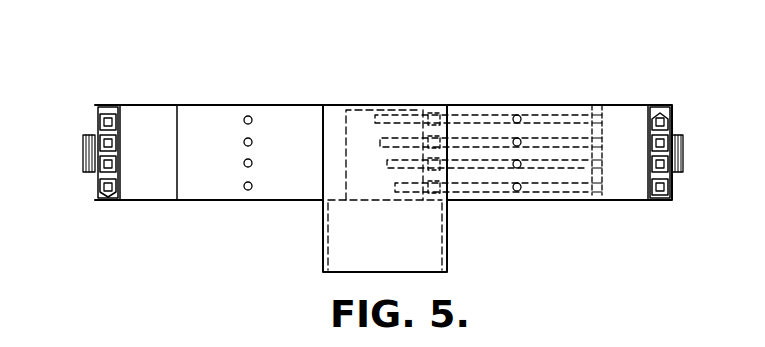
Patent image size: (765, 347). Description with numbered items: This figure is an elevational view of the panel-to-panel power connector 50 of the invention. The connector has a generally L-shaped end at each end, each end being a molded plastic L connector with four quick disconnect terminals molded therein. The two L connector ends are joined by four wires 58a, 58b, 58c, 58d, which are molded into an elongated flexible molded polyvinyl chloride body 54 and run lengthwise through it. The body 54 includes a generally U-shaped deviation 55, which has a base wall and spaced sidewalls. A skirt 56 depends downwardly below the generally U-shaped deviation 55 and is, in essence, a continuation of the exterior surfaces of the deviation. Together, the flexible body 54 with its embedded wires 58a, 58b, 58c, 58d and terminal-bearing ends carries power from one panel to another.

The panel power connector 50 is at (377, 151).
The body 54 is at (300, 77).
The U-shaped deviation 55 is at (406, 84).
The skirt 56 is at (345, 228).
The wire 58a is at (542, 120).
The wire 58b is at (558, 140).
The wire 58c is at (568, 165).
The wire 58d is at (540, 186).